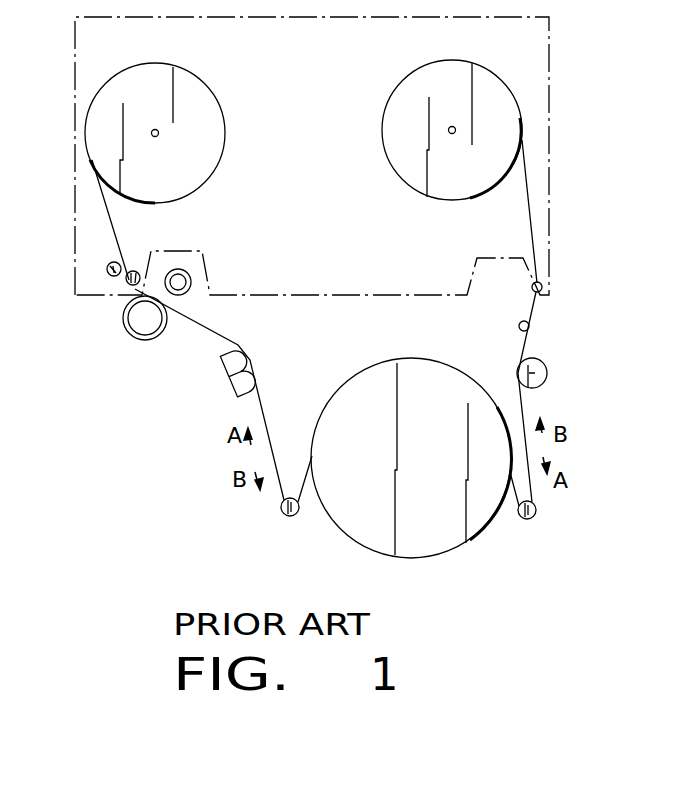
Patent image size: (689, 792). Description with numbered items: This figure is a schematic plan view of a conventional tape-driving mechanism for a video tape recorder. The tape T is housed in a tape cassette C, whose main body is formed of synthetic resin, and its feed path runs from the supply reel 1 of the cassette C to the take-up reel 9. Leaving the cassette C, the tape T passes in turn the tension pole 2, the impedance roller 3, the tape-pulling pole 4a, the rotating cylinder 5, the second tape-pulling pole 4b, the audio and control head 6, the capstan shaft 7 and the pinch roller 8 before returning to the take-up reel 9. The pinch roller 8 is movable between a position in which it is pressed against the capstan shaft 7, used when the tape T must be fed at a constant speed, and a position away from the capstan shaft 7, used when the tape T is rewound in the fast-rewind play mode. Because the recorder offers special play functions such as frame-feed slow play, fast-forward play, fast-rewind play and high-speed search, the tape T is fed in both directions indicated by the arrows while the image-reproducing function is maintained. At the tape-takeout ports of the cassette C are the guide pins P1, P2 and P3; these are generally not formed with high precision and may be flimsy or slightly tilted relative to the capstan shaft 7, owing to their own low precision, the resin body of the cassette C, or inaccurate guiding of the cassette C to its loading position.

The supply reel 1 is at (383, 117).
The take-up reel 9 is at (224, 114).
The cassette C is at (551, 78).
The tape T is at (533, 197).
The guide pin P1 is at (133, 271).
The guide pin P2 is at (107, 270).
The guide pin P3 is at (542, 283).
The capstan shaft 7 is at (193, 282).
The pinch roller 8 is at (127, 333).
The audio and control head 6 is at (231, 372).
The tension pole 2 is at (519, 326).
The impedance roller 3 is at (547, 380).
The tape-pulling pole 4a is at (528, 519).
The tape-pulling pole 4b is at (290, 517).
The rotating cylinder 5 is at (437, 537).